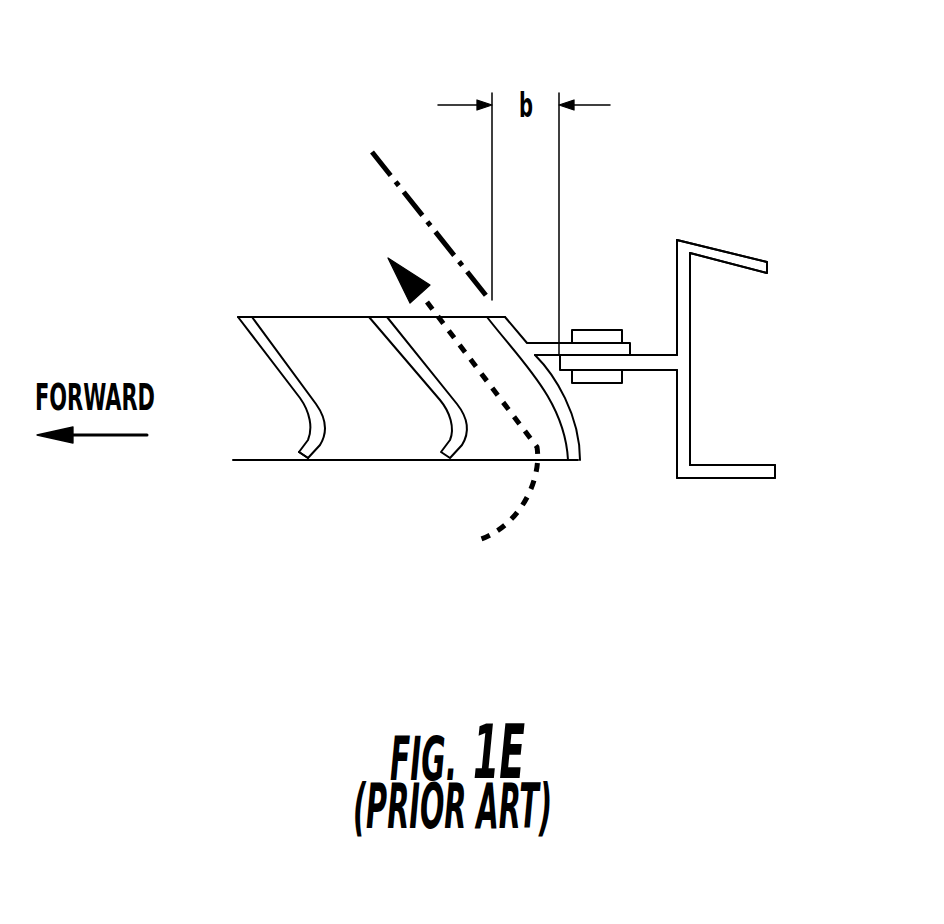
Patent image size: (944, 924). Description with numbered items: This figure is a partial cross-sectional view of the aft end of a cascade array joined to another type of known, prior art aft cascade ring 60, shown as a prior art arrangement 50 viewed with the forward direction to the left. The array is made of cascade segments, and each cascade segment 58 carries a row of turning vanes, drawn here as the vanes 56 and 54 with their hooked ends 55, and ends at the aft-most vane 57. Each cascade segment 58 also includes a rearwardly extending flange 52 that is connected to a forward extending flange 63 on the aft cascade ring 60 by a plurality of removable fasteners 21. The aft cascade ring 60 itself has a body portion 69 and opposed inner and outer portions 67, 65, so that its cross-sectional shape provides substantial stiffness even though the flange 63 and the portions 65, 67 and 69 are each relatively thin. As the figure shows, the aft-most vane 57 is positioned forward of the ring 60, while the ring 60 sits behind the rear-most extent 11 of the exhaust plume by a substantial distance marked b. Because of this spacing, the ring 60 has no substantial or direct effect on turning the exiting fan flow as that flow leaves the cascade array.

The rear-most extent of the exhaust plume 11 is at (393, 175).
The removable fasteners 21 is at (597, 385).
The prior art louver assembly 50 is at (213, 152).
The rearwardly extending flange 52 is at (544, 348).
The hooked louver 54 is at (437, 403).
The hook end of louver 55 is at (257, 283).
The louver 56 is at (303, 338).
The aft-most vane 57 is at (557, 417).
The cascade segment 58 is at (347, 317).
The aft cascade ring 60 is at (763, 255).
The forward extending flange 63 is at (647, 370).
The outer portion 65 is at (712, 245).
The inner portion 67 is at (733, 479).
The body portion 69 is at (692, 410).